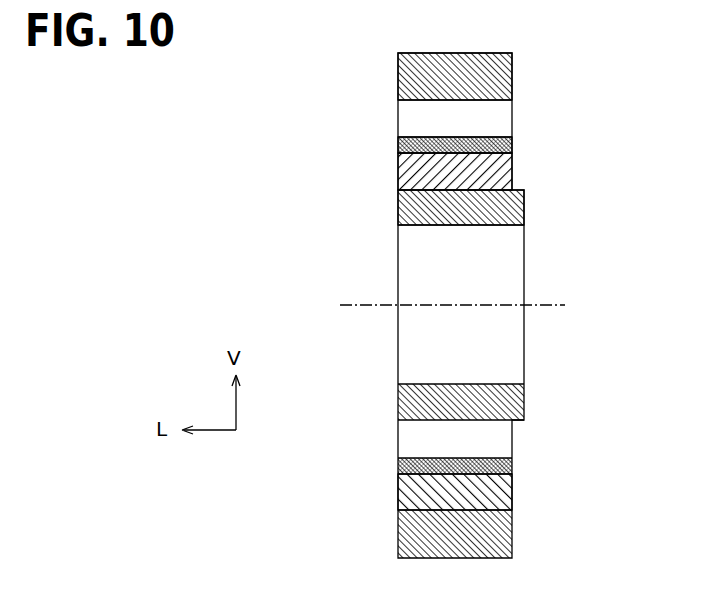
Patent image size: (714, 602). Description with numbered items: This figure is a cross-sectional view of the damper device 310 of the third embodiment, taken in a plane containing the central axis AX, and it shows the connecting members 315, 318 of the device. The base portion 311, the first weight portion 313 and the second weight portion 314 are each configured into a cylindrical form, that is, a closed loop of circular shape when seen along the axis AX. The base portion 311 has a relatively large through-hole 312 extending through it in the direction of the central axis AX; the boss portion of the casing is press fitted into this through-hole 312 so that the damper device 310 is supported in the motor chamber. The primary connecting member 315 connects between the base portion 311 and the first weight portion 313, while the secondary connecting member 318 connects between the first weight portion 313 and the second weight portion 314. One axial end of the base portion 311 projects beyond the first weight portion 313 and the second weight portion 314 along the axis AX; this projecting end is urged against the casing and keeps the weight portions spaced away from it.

The damper device 310 is at (560, 105).
The base portion 311 is at (460, 225).
The through-hole 312 is at (418, 226).
The first weight portion 313 is at (398, 150).
The second weight portion 314 is at (398, 84).
The primary connecting member 315 is at (512, 165).
The secondary connecting member 318 is at (398, 500).
The central axis AX is at (557, 302).